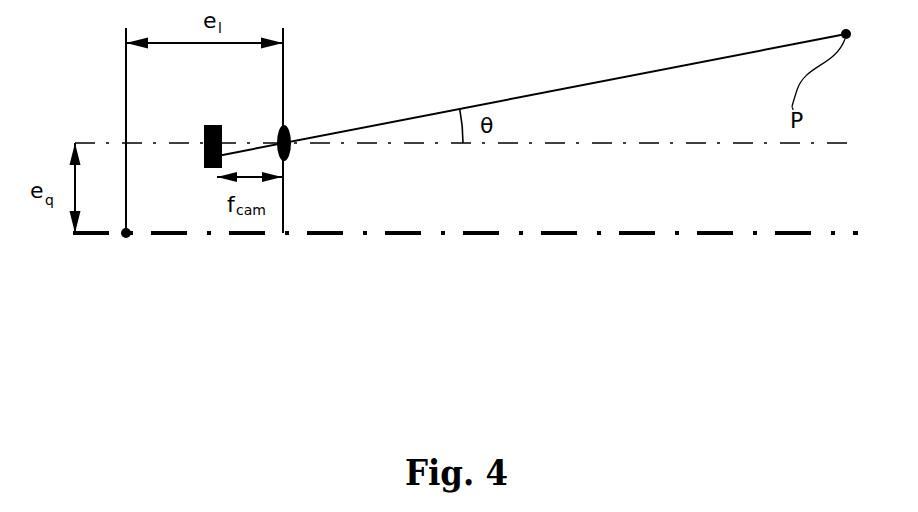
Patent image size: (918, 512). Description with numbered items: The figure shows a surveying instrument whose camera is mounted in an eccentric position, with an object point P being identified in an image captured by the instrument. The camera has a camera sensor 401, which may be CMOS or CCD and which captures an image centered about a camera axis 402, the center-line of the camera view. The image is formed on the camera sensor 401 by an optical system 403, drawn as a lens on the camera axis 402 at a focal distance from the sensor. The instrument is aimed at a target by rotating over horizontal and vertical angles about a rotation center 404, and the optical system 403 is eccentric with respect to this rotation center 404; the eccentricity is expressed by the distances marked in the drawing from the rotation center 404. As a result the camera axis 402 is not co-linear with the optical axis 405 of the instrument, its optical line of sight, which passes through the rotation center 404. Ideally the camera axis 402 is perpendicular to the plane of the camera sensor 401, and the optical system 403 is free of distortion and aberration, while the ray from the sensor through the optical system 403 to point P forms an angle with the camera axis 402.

The camera sensor 401 is at (212, 125).
The camera axis 402 is at (466, 179).
The optical system 403 is at (287, 127).
The rotation center 404 is at (128, 236).
The optical axis 405 is at (342, 234).